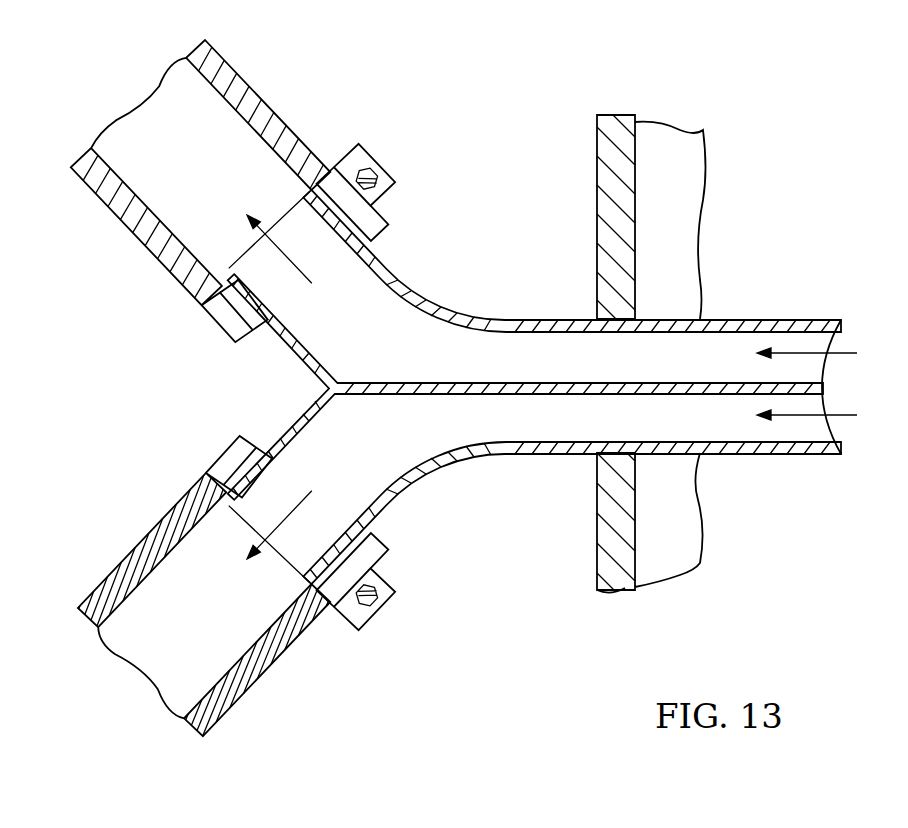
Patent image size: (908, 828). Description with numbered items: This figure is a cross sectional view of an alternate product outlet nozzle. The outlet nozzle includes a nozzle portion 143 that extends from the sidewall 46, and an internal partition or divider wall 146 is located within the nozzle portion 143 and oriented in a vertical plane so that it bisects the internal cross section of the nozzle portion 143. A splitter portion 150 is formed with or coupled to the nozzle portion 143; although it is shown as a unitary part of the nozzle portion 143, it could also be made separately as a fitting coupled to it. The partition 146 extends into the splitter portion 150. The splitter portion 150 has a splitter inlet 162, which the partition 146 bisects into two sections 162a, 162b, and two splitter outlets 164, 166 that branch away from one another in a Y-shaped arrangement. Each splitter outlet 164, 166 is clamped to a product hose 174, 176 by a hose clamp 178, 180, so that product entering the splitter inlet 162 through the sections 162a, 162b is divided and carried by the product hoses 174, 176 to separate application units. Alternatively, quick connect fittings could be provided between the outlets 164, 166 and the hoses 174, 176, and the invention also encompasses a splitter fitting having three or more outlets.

The sidewall 46 is at (596, 213).
The nozzle portion 143 is at (568, 455).
The partition 146 is at (484, 378).
The splitter portion 150 is at (542, 387).
The splitter inlet 162 is at (525, 387).
The splitter inlet section 162a is at (545, 350).
The splitter inlet section 162b is at (478, 435).
The splitter outlet 164 is at (312, 222).
The splitter outlet 166 is at (312, 553).
The product hose 174 is at (150, 253).
The product hose 176 is at (150, 527).
The hose clamp 178 is at (356, 143).
The hose clamp 180 is at (380, 608).